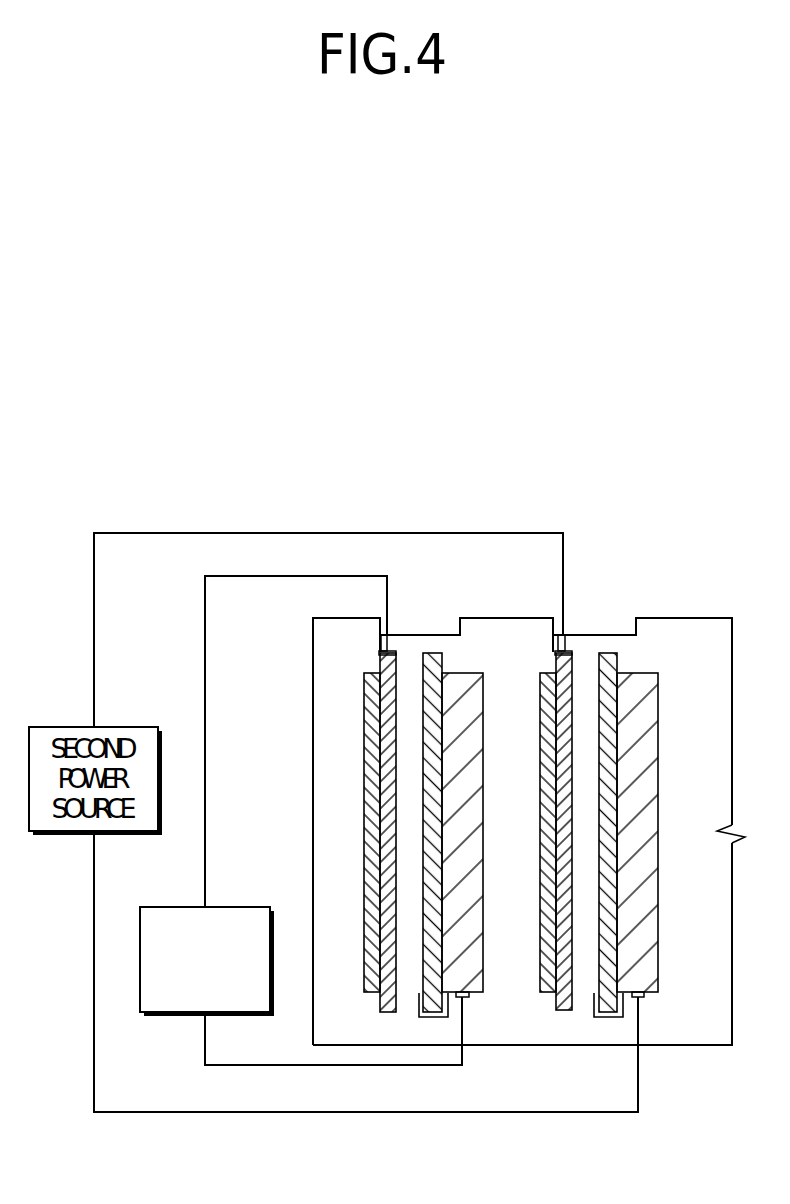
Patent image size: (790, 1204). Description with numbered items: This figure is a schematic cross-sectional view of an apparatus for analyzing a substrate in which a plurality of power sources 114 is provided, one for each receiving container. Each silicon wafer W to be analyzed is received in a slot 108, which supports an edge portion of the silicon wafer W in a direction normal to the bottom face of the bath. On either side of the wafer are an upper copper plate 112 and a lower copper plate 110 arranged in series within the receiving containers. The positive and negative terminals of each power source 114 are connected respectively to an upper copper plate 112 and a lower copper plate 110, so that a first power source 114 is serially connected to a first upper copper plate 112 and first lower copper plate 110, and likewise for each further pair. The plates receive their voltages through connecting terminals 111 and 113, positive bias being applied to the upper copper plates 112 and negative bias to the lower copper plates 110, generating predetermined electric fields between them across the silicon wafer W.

The slot 108 is at (428, 853).
The lower copper plate 110 is at (473, 958).
The connecting terminal 111 is at (644, 994).
The upper copper plate 112 is at (392, 673).
The connecting terminal 113 is at (566, 634).
The power source 114 is at (232, 907).
The silicon wafer W is at (431, 652).